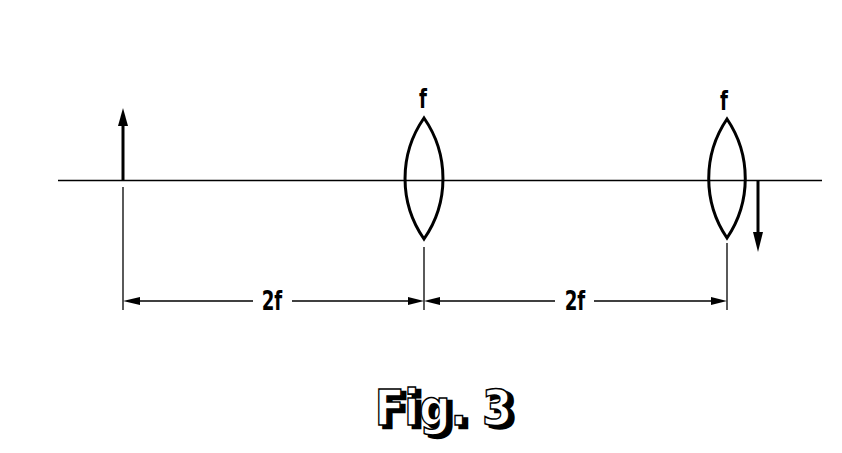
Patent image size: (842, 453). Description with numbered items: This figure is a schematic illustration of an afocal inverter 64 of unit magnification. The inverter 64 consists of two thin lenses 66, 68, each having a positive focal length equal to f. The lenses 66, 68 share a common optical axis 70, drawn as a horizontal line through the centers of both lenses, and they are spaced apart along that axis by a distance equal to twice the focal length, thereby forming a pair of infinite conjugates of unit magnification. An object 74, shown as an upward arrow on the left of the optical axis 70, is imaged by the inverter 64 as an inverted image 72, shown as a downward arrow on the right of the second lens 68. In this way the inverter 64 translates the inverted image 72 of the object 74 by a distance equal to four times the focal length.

The afocal inverter 64 is at (479, 98).
The thin lens 66 is at (438, 163).
The thin lens 68 is at (733, 165).
The common optical axis 70 is at (287, 180).
The inverted image 72 is at (762, 205).
The object 74 is at (120, 151).